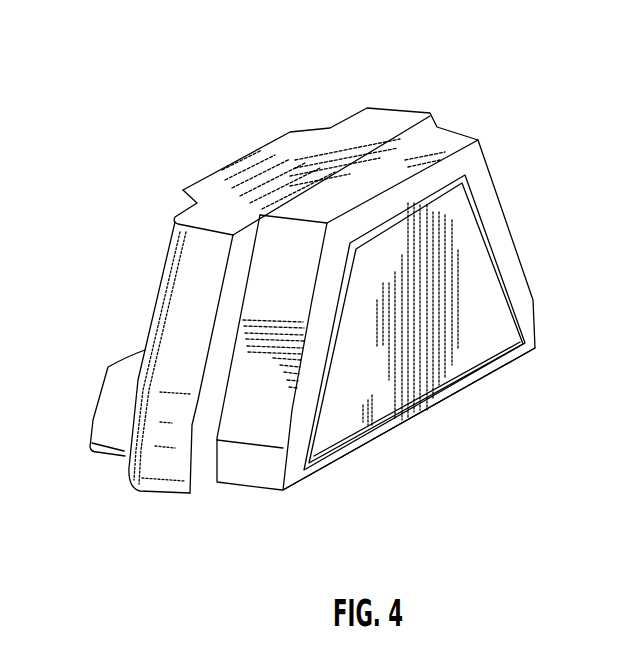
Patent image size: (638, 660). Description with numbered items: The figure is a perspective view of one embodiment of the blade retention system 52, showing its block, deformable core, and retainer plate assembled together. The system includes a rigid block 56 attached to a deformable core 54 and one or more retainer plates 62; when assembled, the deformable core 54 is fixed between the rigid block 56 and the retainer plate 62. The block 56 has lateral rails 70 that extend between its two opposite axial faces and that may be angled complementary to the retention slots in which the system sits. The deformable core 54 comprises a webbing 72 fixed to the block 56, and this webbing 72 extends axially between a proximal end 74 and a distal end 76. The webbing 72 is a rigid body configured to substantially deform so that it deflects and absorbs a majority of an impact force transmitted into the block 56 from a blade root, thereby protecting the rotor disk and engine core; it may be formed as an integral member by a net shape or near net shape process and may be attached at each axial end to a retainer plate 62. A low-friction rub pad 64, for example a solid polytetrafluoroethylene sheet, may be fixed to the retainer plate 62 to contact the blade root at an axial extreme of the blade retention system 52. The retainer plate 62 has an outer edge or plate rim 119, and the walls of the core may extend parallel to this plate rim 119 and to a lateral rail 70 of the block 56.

The blade retention system 52 is at (318, 284).
The deformable core 54 is at (405, 289).
The webbing 72 is at (453, 142).
The rigid block 56 is at (214, 187).
The retainer plate 62 is at (455, 322).
The rub pad 64 is at (495, 340).
The lateral rail 70 is at (182, 310).
The proximal end 74 is at (285, 492).
The distal end 76 is at (217, 482).
The plate rim 119 is at (317, 290).